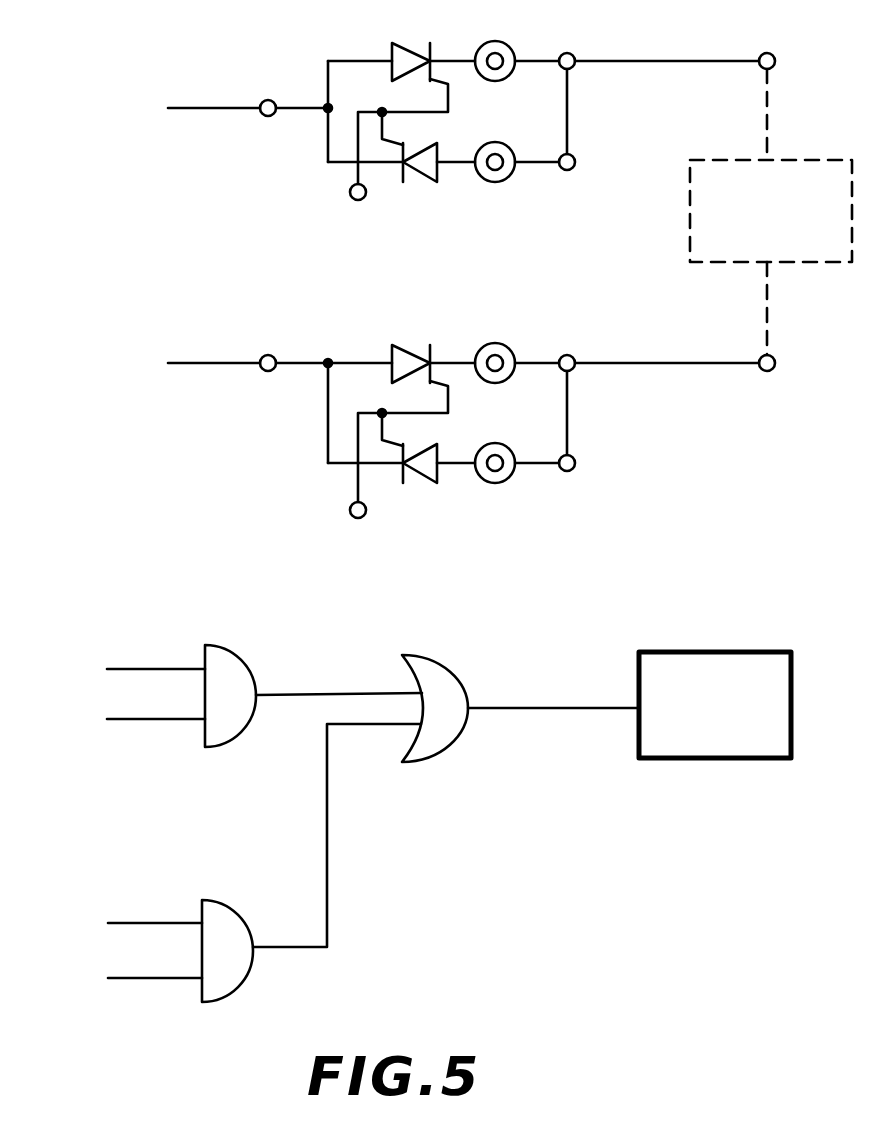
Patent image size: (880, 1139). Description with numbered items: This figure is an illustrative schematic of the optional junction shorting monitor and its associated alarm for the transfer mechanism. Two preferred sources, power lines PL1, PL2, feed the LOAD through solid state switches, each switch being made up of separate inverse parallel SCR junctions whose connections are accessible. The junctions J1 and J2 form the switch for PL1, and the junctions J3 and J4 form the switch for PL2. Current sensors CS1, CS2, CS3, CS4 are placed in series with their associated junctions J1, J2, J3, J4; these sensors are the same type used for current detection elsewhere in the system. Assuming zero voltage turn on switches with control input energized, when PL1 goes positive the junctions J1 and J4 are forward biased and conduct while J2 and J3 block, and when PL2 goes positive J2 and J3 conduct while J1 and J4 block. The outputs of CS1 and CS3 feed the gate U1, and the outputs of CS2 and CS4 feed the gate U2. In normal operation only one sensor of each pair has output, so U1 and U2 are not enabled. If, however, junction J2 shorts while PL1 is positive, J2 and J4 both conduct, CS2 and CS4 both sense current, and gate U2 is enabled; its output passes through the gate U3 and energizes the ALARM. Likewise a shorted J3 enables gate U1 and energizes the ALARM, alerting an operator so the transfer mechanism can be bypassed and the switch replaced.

The preferred source power line PL1 is at (218, 108).
The preferred source power line PL2 is at (218, 363).
The solid state switch junction J1 is at (412, 100).
The solid state switch junction J2 is at (428, 169).
The solid state switch junction J3 is at (412, 408).
The solid state switch junction J4 is at (428, 471).
The current sensor CS1 is at (285, 343).
The current sensor CS2 is at (285, 524).
The current sensor CS3 is at (283, 521).
The current sensor CS4 is at (283, 705).
The gate U1 is at (264, 696).
The gate U2 is at (264, 863).
The gate U3 is at (520, 708).
The load LOAD is at (771, 212).
The alarm ALARM is at (715, 705).